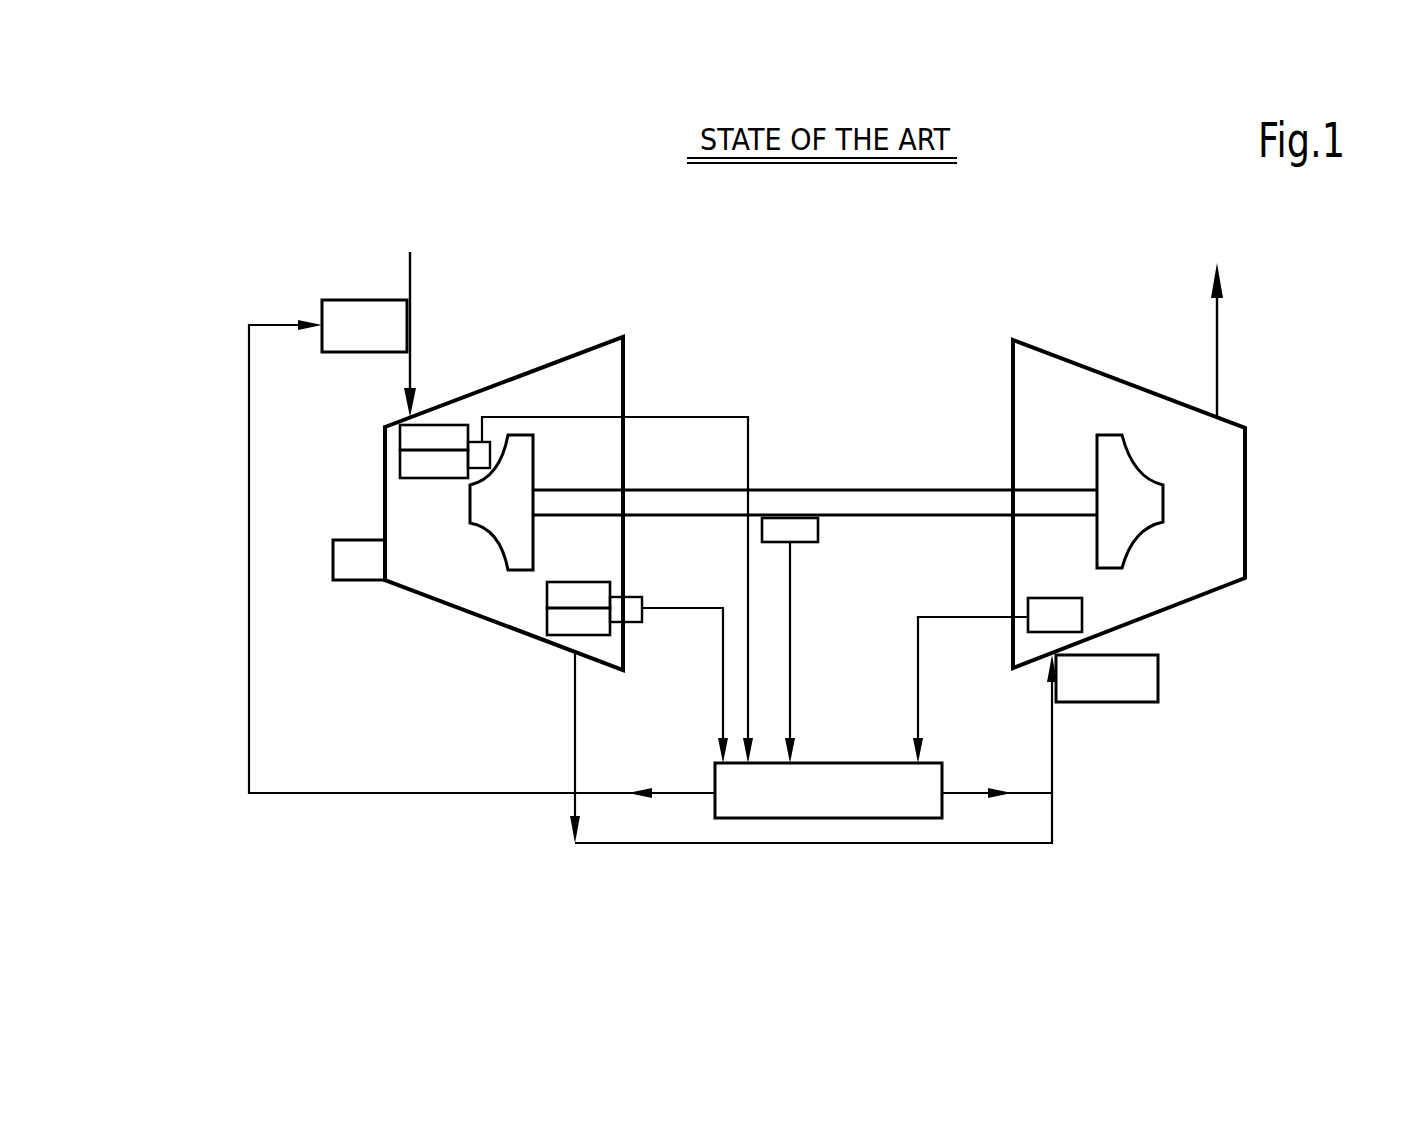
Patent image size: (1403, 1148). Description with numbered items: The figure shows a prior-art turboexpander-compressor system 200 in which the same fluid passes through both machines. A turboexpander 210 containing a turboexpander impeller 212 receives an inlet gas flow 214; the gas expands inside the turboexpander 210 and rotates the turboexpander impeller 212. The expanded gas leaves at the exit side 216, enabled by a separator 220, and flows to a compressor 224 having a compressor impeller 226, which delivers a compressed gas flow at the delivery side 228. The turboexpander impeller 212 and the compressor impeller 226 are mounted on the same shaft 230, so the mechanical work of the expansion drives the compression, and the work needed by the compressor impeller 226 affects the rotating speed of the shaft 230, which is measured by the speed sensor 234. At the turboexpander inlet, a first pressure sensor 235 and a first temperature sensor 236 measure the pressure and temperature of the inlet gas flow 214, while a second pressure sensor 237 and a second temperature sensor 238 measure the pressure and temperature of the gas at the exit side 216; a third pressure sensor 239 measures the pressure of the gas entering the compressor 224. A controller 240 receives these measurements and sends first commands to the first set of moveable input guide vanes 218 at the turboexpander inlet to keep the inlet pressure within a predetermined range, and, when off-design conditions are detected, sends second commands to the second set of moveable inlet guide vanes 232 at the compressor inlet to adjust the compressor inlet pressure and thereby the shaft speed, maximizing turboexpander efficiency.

The turboexpander-compressor system 200 is at (835, 250).
The turboexpander 210 is at (623, 338).
The turboexpander impeller 212 is at (498, 547).
The inlet gas flow 214 is at (408, 320).
The exit side gas flow 216 is at (574, 733).
The first set of moveable input guide vanes 218 is at (371, 298).
The separator 220 is at (333, 580).
The compressor 224 is at (1013, 340).
The compressor impeller 226 is at (1133, 543).
The delivery side 228 is at (1222, 323).
The shaft 230 is at (902, 488).
The second set of moveable inlet guide vanes 232 is at (1135, 702).
The speed sensor 234 is at (820, 540).
The sensor Sp1 235 is at (398, 435).
The sensor ST1 236 is at (400, 466).
The sensor Sp2 237 is at (596, 636).
The sensor ST2 238 is at (594, 582).
The sensor Sp3 239 is at (1082, 608).
The controller 240 is at (843, 762).